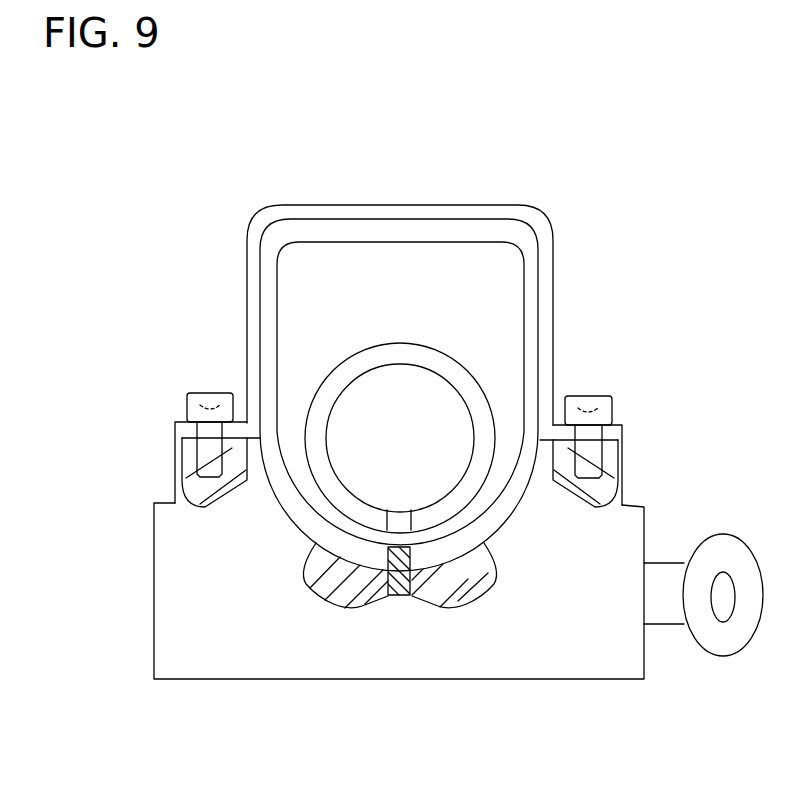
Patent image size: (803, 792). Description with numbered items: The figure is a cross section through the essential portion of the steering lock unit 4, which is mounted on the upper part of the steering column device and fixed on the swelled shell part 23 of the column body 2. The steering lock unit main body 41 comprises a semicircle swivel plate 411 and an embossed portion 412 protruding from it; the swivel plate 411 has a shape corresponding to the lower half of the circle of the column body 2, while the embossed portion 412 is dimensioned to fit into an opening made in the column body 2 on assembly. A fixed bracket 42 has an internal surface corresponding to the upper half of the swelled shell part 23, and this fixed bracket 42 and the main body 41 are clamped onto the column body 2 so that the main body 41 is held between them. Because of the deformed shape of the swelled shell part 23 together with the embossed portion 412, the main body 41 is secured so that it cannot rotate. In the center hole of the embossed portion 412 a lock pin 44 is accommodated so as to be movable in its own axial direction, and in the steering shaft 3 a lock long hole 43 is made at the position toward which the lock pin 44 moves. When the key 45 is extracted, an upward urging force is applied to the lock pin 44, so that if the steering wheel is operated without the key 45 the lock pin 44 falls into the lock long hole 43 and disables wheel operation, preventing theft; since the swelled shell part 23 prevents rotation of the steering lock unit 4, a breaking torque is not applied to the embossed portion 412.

The column body 2 is at (270, 268).
The steering shaft 3 is at (322, 390).
The steering lock unit 4 is at (392, 154).
The swelled shell part 23 is at (530, 305).
The steering lock unit main body 41 is at (390, 667).
The fixed bracket 42 is at (552, 248).
The lock long hole 43 is at (398, 510).
The lock pin 44 is at (397, 590).
The key 45 is at (722, 640).
The swivel plate 411 is at (287, 518).
The embossed portion 412 is at (307, 583).